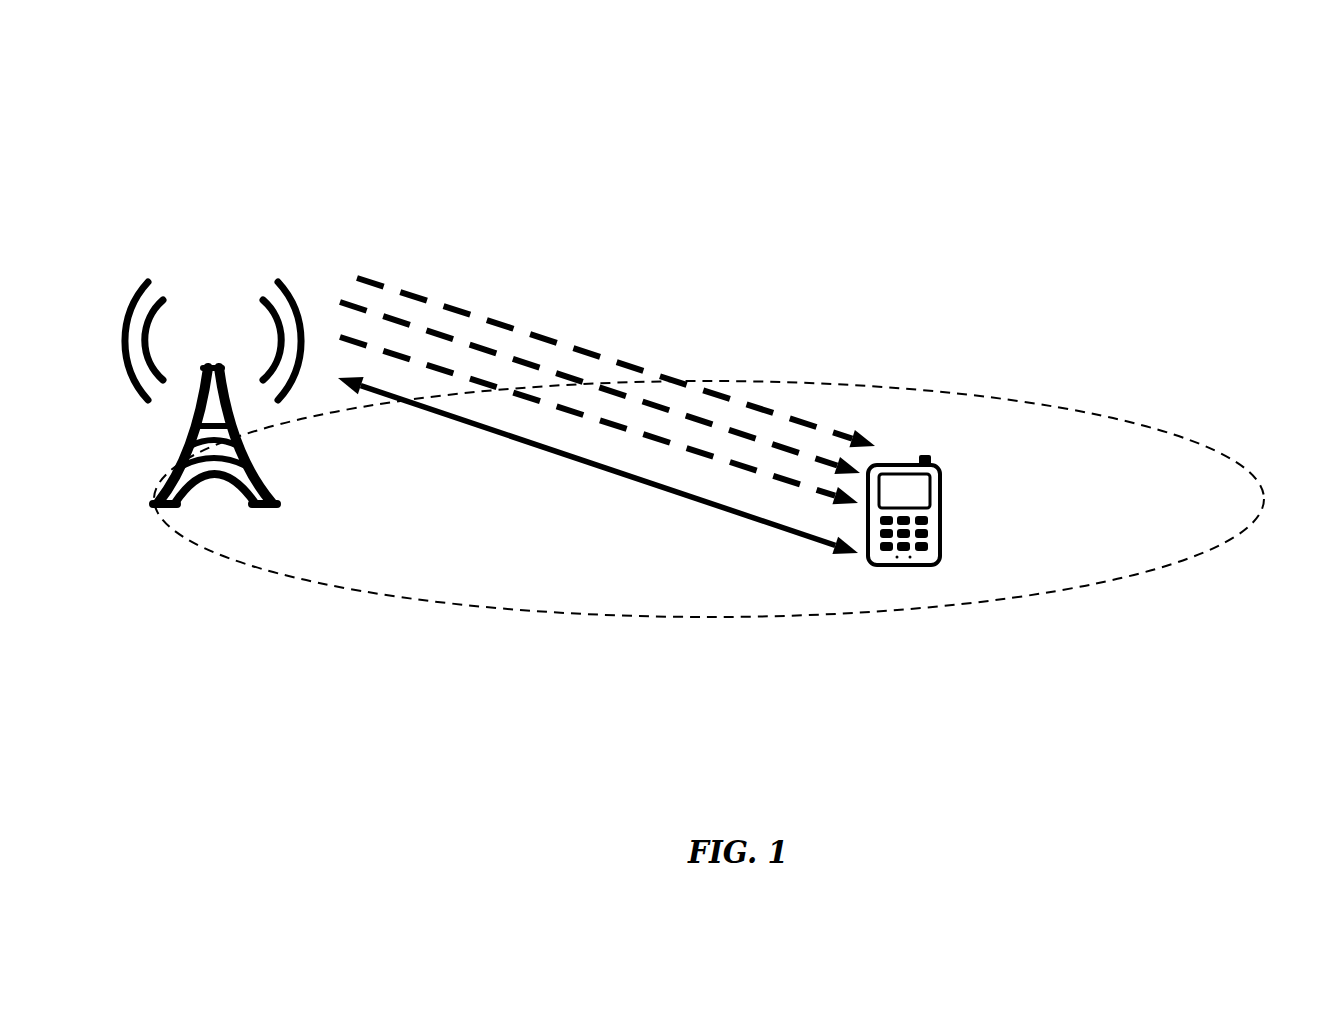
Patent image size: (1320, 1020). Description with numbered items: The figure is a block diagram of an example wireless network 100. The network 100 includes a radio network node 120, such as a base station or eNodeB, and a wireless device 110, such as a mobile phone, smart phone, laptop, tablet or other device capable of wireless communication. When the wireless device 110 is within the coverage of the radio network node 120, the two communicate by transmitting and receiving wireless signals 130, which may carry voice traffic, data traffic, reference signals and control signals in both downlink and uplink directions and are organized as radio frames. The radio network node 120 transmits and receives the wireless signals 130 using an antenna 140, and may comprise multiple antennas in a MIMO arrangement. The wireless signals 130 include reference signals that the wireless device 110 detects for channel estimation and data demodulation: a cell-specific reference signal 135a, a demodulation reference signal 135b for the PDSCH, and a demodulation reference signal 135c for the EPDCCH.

The network 100 is at (709, 312).
The wireless device 110 is at (900, 555).
The radio network node 120 is at (213, 324).
The wireless signals 130 is at (807, 538).
The reference signal 135a is at (603, 332).
The target signal 135b is at (678, 407).
The DMRS 135c is at (743, 455).
The antenna 140 is at (215, 416).